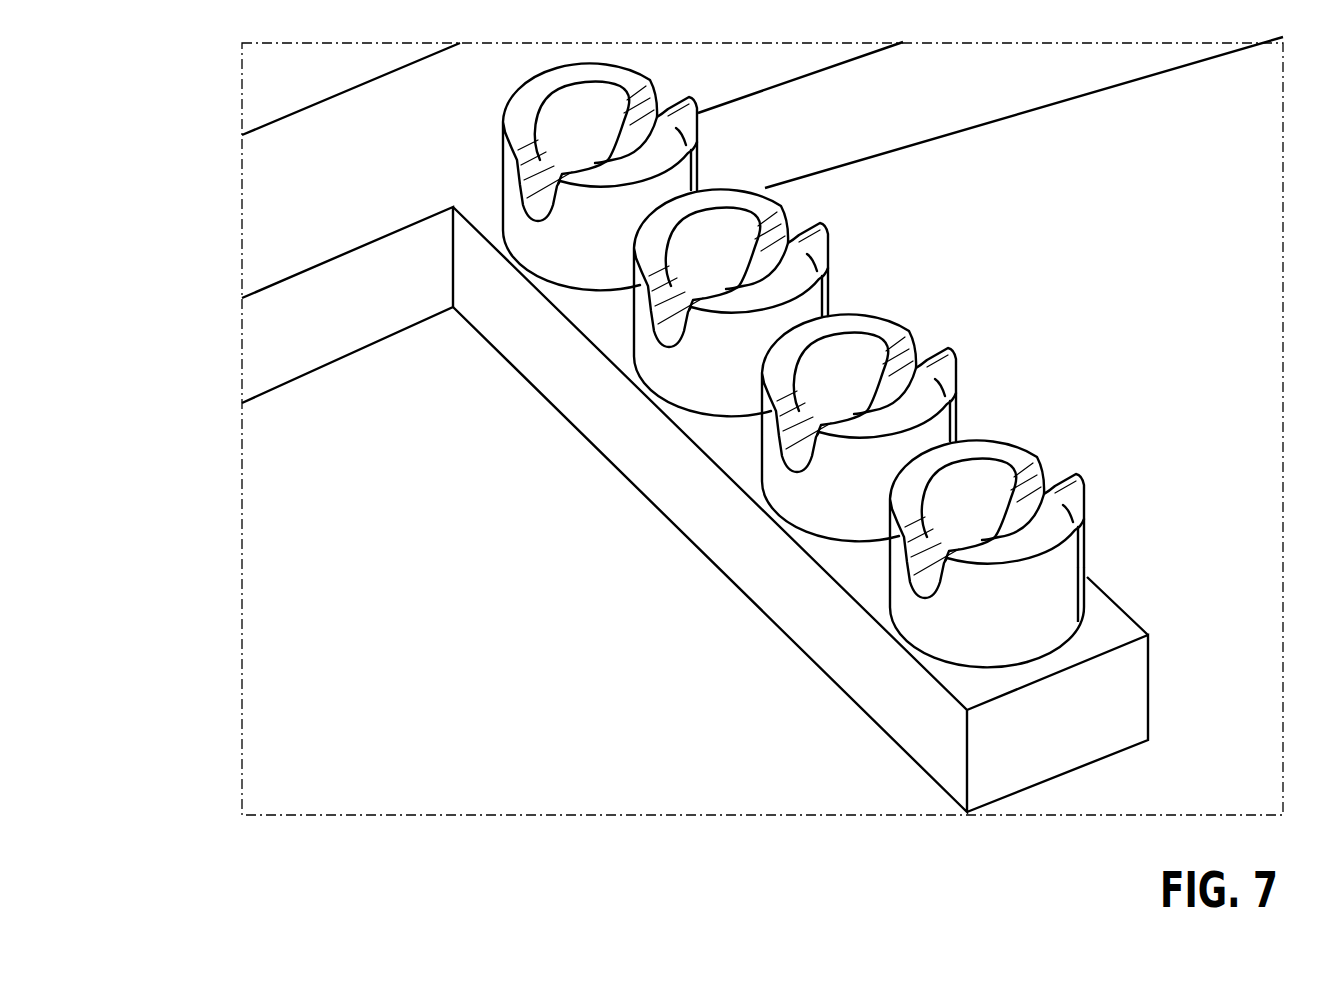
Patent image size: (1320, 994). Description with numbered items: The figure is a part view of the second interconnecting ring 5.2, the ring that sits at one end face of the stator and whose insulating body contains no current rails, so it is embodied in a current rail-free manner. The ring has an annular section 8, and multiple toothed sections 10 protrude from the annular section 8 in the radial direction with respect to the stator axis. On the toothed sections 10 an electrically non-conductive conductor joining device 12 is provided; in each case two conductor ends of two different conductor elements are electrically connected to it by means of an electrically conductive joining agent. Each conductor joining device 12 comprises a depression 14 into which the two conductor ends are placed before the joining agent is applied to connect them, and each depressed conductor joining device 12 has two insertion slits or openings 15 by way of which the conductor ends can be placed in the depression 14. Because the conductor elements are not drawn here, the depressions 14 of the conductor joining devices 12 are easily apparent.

The second interconnecting ring 5.2 is at (1030, 70).
The annular section 8 is at (308, 192).
The toothed section 10 is at (915, 705).
The conductor joining device 12 is at (697, 127).
The depression 14 is at (573, 112).
The insertion slit 15 is at (778, 230).